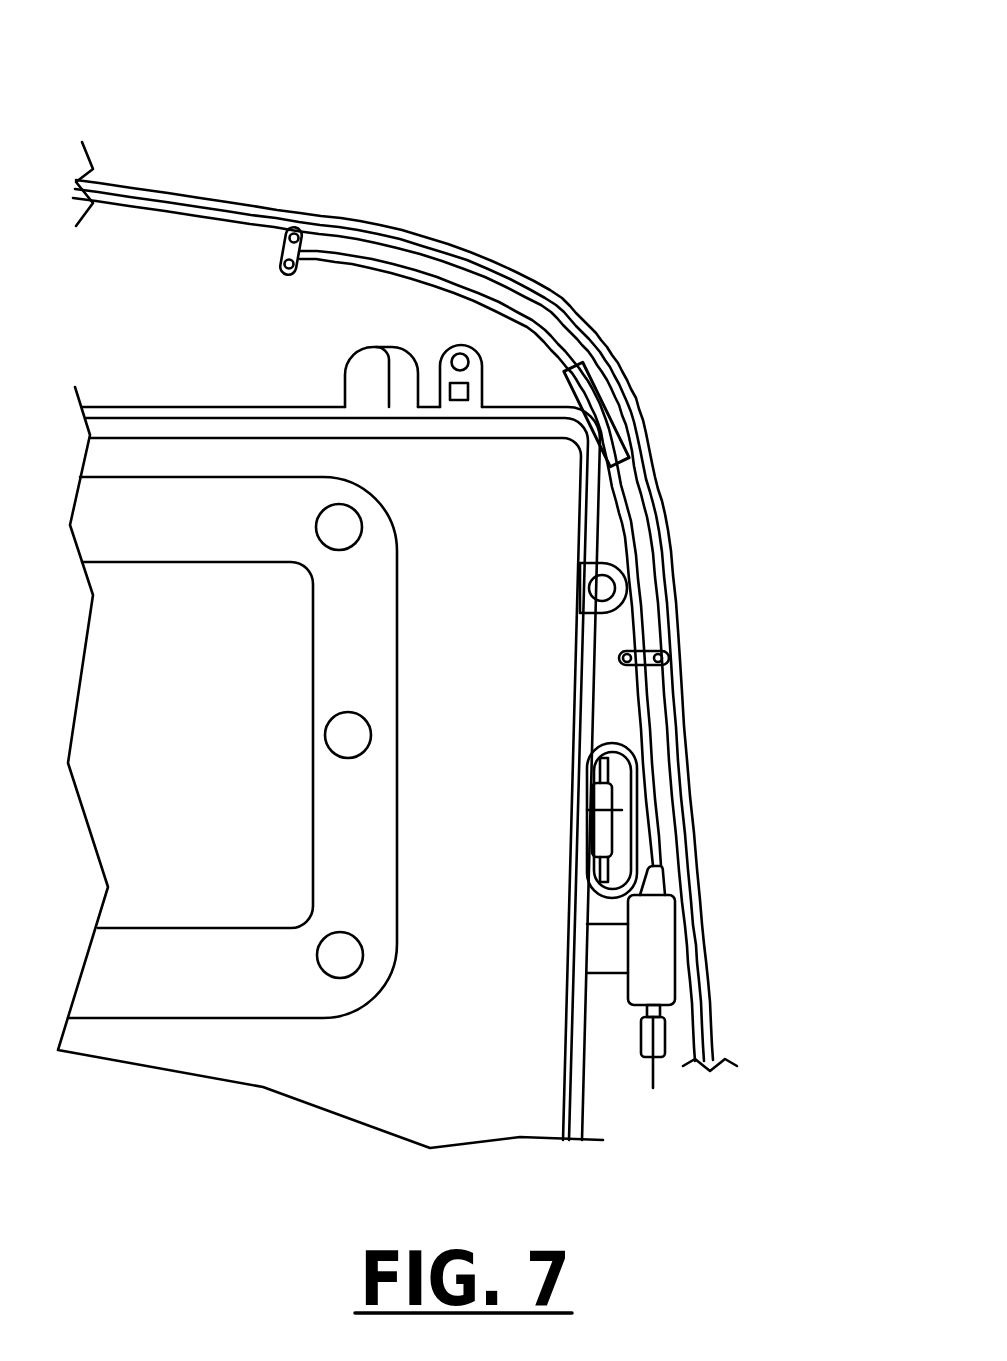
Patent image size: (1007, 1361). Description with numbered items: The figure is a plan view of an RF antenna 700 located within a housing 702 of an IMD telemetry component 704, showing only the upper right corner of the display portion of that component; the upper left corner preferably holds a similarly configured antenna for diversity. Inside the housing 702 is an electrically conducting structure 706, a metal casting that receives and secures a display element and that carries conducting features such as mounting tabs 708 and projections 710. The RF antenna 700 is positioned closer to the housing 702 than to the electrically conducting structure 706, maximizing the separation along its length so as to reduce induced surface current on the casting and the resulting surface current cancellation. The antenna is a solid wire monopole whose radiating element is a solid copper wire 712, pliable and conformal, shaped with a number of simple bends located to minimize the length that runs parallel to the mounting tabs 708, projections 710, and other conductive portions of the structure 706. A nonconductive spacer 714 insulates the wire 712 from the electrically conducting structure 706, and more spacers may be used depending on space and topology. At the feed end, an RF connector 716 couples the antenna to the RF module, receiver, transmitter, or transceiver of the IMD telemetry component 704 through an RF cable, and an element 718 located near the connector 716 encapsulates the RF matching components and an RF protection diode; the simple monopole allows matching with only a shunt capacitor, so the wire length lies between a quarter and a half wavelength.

The RF antenna 700 is at (502, 305).
The housing 702 is at (328, 212).
The IMD telemetry component 704 is at (492, 50).
The electrically conducting structure 706 is at (465, 491).
The mounting tabs 708 is at (371, 374).
The projections 710 is at (587, 810).
The solid copper wire 712 is at (648, 702).
The nonconductive spacer 714 is at (607, 425).
The RF connector 716 is at (653, 1088).
The element 718 is at (660, 967).